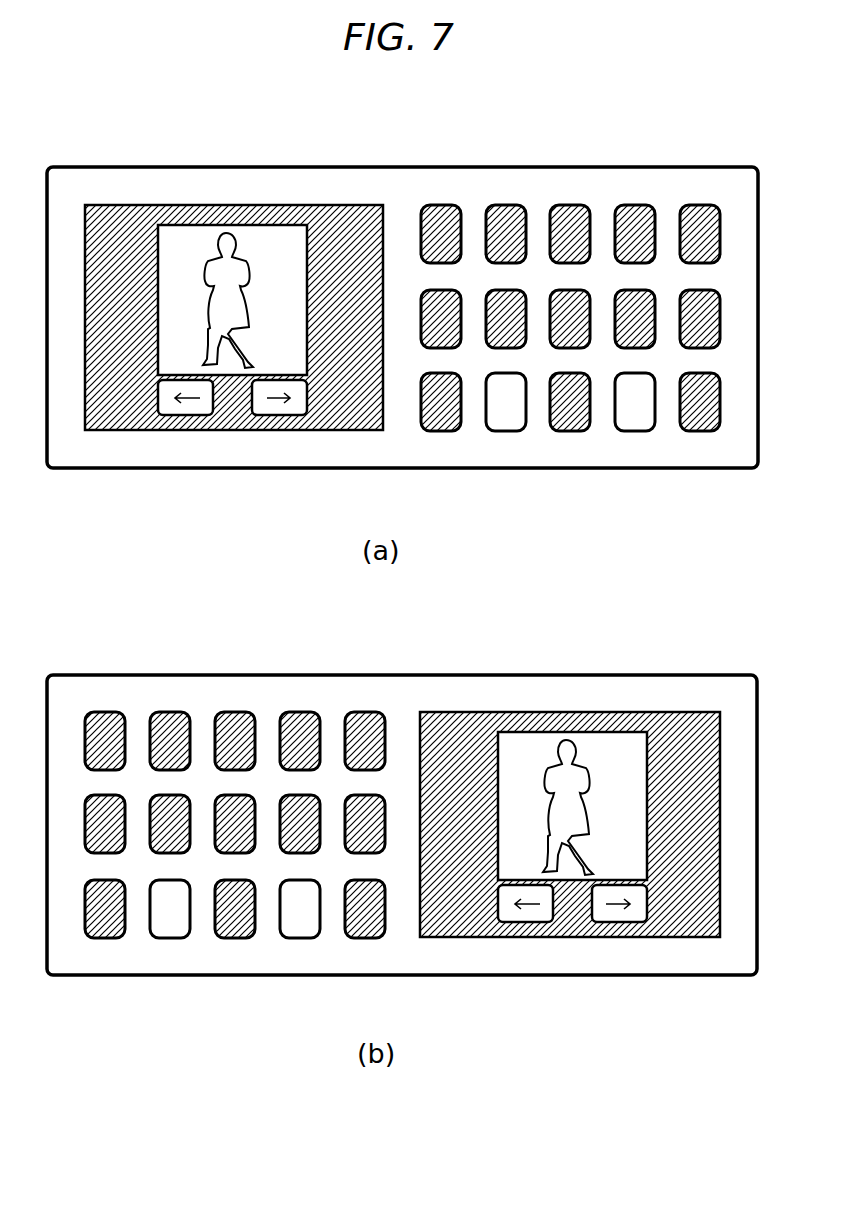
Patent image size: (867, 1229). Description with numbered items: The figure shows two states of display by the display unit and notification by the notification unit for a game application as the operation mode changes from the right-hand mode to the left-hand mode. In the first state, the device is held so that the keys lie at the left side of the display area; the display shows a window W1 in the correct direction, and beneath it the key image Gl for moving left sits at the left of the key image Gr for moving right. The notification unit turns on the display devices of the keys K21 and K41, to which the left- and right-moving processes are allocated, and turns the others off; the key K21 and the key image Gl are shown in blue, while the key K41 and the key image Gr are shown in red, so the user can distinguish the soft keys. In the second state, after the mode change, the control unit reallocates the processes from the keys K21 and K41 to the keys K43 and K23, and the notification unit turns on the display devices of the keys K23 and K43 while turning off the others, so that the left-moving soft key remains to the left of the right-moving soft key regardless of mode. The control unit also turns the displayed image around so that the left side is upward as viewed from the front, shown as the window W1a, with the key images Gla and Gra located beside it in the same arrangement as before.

The window W1 is at (277, 228).
The key image Gl is at (178, 417).
The key image Gr is at (285, 417).
The key K21 is at (500, 432).
The key K41 is at (632, 432).
The window W1a is at (602, 742).
The key K43 is at (167, 938).
The key K23 is at (297, 938).
The key image Gla is at (518, 922).
The key image Gra is at (627, 922).